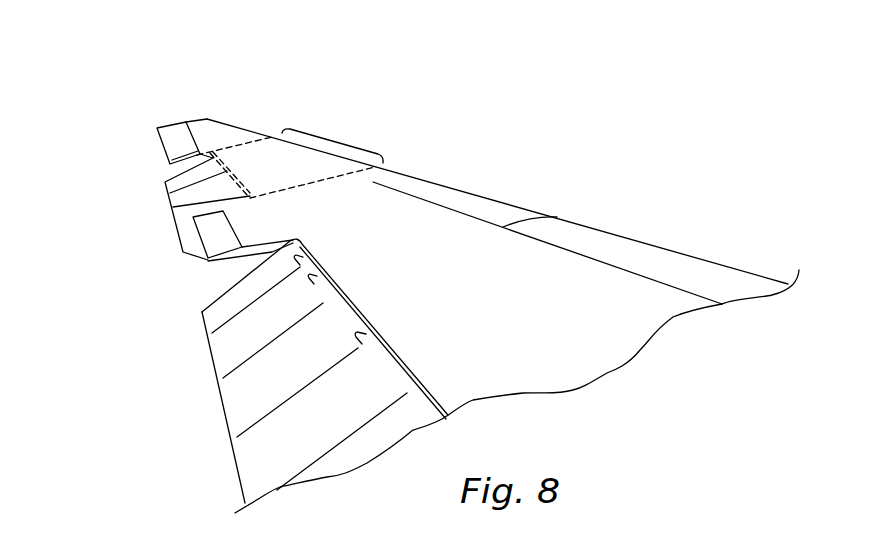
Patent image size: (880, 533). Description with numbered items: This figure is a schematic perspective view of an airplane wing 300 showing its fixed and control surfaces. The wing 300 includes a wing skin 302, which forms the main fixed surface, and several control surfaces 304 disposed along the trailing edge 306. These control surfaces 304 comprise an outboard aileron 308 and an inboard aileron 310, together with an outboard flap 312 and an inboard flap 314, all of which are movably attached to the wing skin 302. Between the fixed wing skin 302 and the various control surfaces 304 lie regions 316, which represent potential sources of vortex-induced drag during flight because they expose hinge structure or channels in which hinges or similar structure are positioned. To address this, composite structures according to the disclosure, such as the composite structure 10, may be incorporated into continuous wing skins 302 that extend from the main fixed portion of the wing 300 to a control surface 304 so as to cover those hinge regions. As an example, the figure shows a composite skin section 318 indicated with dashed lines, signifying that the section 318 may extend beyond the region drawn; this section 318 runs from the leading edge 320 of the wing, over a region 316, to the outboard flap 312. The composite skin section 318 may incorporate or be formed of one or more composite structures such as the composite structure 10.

The composite structure 10 is at (316, 121).
The airplane wing 300 is at (519, 174).
The wing skin 302 is at (427, 256).
The control surfaces 304 is at (148, 220).
The trailing edge 306 is at (153, 138).
The outboard aileron 308 is at (172, 135).
The inboard aileron 310 is at (205, 262).
The outboard flap 312 is at (223, 229).
The inboard flap 314 is at (235, 453).
The regions 316 is at (193, 131).
The composite skin section 318 is at (346, 143).
The leading edge 320 is at (627, 237).